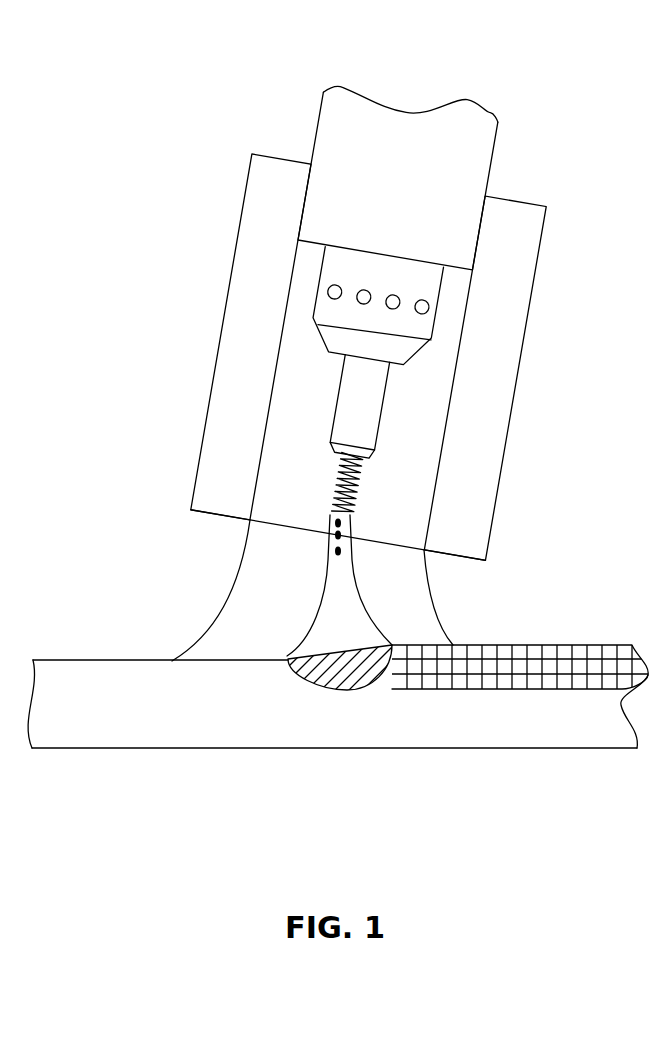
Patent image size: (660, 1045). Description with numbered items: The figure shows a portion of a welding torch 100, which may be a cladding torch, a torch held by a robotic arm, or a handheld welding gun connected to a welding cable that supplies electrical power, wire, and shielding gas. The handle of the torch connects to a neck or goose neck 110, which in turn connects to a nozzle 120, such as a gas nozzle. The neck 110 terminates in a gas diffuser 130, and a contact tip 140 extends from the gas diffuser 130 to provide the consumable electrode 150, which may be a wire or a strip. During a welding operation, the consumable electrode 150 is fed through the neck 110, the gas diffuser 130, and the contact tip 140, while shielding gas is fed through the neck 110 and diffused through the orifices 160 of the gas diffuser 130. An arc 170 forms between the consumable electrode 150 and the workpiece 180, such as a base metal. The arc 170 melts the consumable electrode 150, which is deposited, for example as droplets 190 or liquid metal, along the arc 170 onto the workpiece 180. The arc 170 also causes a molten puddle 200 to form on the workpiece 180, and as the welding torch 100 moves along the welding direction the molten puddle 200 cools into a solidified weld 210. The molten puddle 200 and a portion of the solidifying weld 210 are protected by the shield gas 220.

The welding torch 100 is at (121, 65).
The neck 110 is at (500, 138).
The nozzle 120 is at (240, 213).
The gas diffuser 130 is at (437, 300).
The contact tip 140 is at (379, 426).
The consumable electrode 150 is at (336, 480).
The orifices 160 is at (365, 289).
The arc 170 is at (374, 620).
The workpiece 180 is at (128, 750).
The droplets 190 is at (315, 543).
The molten puddle 200 is at (297, 672).
The solidified weld 210 is at (520, 690).
The shield gas 220 is at (440, 612).